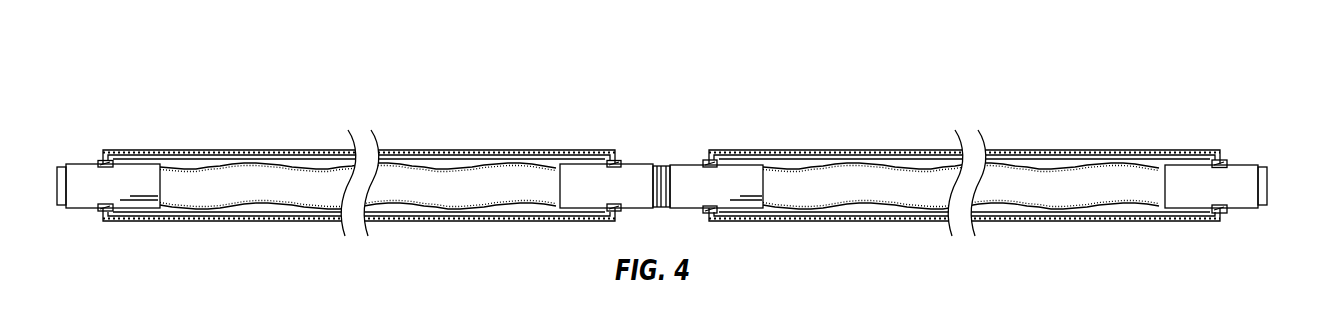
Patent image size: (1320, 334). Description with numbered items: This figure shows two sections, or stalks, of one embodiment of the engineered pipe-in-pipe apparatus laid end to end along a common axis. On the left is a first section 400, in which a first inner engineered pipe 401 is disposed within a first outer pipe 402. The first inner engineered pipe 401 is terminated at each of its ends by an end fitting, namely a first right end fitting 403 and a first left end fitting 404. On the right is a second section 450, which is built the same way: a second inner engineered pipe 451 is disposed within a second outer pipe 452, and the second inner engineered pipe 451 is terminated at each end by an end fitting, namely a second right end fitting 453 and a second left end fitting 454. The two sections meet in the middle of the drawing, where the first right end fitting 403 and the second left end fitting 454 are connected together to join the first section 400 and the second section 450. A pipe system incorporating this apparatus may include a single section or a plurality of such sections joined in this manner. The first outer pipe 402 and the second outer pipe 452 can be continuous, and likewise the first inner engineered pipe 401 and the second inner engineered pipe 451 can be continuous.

The first section 400 is at (163, 102).
The first inner engineered pipe 401 is at (438, 197).
The first outer pipe 402 is at (460, 151).
The first right end fitting 403 is at (637, 162).
The first left end fitting 404 is at (82, 162).
The second section 450 is at (1169, 102).
The second inner engineered pipe 451 is at (1030, 200).
The second outer pipe 452 is at (1063, 151).
The second right end fitting 453 is at (1242, 164).
The second left end fitting 454 is at (688, 163).